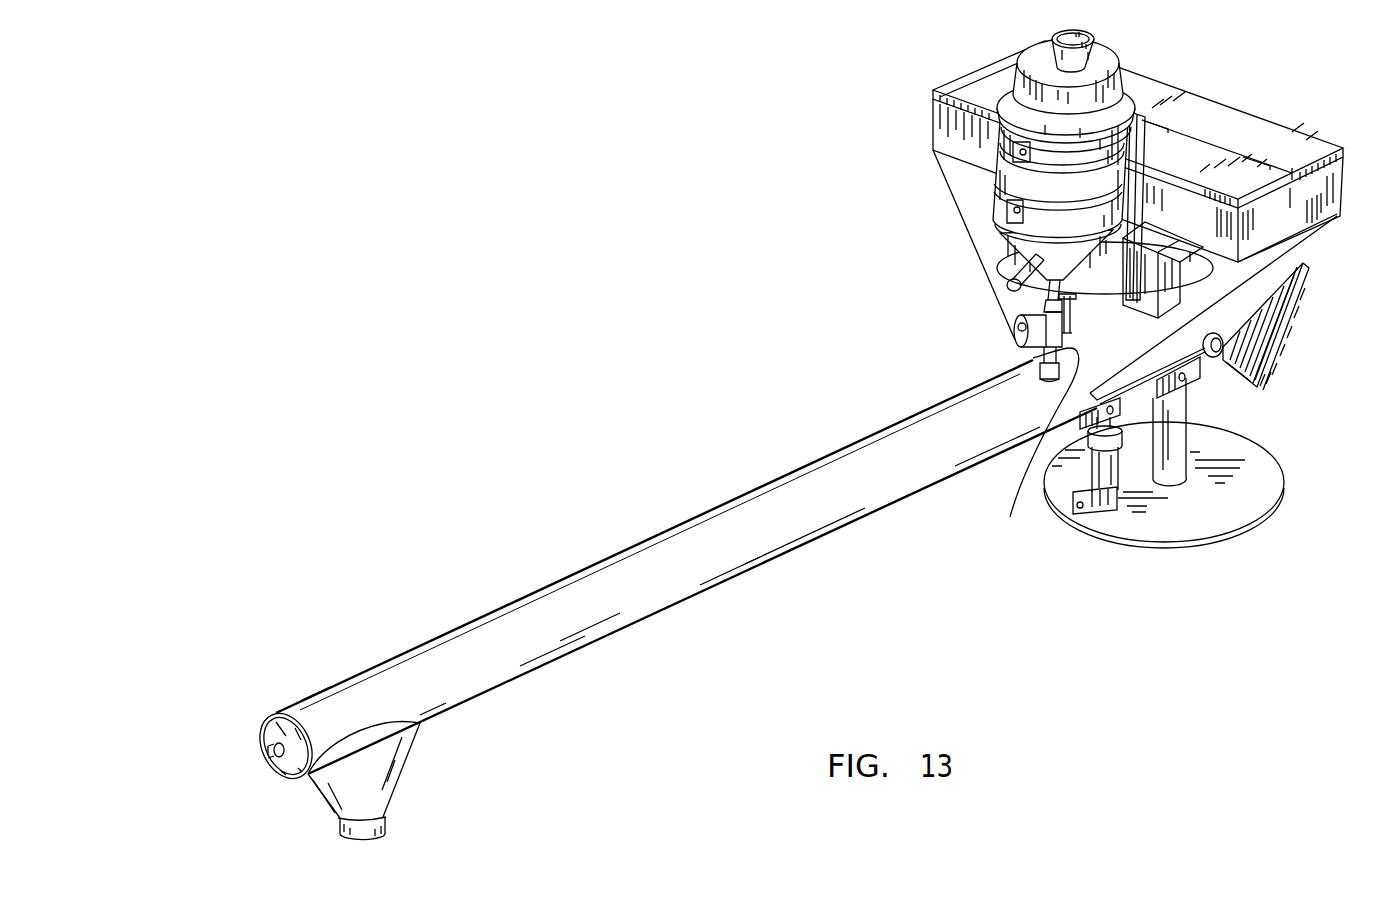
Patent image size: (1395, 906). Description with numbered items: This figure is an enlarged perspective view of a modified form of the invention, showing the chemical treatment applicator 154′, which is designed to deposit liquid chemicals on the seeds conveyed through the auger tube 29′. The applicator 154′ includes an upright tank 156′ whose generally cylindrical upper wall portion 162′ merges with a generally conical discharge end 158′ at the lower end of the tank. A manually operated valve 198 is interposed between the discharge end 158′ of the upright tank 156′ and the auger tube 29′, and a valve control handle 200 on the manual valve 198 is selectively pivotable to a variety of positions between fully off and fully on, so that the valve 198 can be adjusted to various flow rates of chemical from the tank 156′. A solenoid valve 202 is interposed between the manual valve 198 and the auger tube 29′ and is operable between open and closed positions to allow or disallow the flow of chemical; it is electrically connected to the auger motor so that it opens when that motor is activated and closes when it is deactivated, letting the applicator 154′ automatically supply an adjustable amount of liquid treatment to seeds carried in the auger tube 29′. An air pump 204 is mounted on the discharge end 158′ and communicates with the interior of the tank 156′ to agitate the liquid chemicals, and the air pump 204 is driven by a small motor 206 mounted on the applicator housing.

The chemical treatment applicator 154′ is at (896, 201).
The upper wall portion 162′ is at (1040, 164).
The upright tank 156′ is at (1003, 210).
The discharge end 158′ is at (1027, 260).
The air pump 204 is at (1046, 286).
The manually operated valve 198 is at (1058, 297).
The solenoid valve 202 is at (1016, 340).
The valve control handle 200 is at (1031, 449).
The small motor 206 is at (1150, 238).
The auger tube 29′ is at (640, 555).